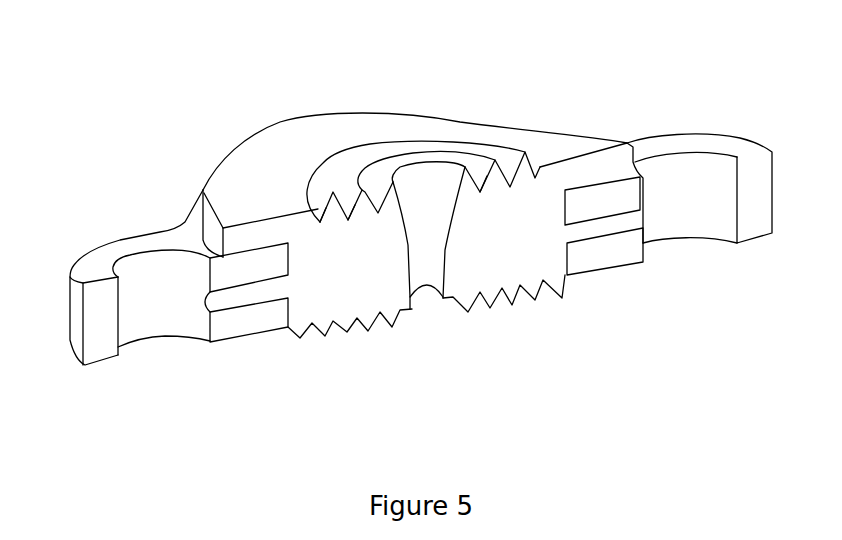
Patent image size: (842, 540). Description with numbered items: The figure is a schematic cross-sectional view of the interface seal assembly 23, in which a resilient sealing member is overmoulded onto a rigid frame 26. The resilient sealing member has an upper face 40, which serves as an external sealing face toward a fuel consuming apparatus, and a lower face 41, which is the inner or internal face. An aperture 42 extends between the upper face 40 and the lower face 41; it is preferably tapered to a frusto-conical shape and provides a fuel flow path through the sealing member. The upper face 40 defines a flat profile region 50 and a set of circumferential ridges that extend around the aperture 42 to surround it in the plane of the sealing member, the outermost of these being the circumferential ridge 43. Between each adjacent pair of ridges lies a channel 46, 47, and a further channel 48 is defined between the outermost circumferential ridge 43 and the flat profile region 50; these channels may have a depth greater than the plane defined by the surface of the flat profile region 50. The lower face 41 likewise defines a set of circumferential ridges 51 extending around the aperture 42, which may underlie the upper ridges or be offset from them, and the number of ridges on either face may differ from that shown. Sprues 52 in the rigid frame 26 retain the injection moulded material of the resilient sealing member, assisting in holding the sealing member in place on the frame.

The interface seal assembly 23 is at (108, 208).
The rigid frame 26 is at (268, 318).
The upper face 40 is at (303, 135).
The lower face 41 is at (527, 322).
The aperture 42 is at (428, 300).
The circumferential ridge 43 is at (333, 192).
The channel 46 is at (348, 221).
The channel 47 is at (480, 193).
The channel 48 is at (320, 223).
The flat profile region 50 is at (547, 140).
The circumferential ridges 51 is at (297, 335).
The sprues 52 is at (233, 300).